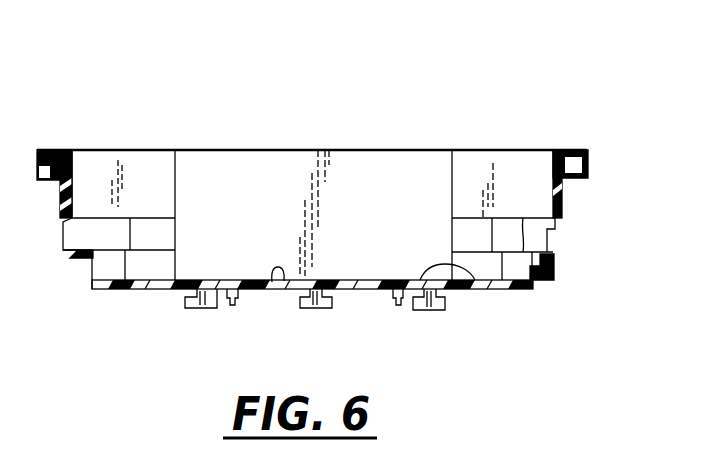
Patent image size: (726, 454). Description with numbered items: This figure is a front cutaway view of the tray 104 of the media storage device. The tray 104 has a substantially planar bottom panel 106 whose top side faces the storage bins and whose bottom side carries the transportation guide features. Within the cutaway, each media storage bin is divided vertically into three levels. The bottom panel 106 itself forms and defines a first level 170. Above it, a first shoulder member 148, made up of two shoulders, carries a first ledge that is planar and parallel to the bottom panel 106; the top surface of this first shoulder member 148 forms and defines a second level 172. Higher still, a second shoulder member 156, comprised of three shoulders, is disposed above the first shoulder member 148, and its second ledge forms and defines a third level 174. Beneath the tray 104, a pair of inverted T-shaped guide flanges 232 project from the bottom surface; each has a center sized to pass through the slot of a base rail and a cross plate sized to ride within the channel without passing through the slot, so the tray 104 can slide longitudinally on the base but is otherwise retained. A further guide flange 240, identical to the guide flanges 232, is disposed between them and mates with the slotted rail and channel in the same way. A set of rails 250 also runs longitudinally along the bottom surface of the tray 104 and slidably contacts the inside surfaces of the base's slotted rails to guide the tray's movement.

The tray 104 is at (449, 141).
The third level 174 is at (83, 218).
The second level 172 is at (157, 250).
The second shoulder member 156 is at (108, 237).
The first shoulder member 148 is at (112, 273).
The guide flange 232 is at (197, 308).
The rails 250 is at (233, 305).
The first level 170 is at (272, 281).
The guide flange 240 is at (315, 308).
The bottom panel 106 is at (458, 282).